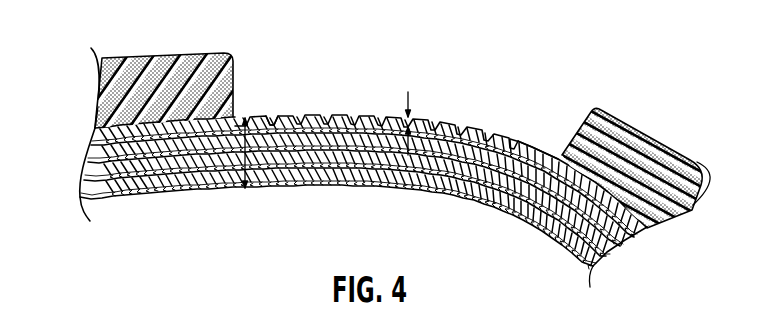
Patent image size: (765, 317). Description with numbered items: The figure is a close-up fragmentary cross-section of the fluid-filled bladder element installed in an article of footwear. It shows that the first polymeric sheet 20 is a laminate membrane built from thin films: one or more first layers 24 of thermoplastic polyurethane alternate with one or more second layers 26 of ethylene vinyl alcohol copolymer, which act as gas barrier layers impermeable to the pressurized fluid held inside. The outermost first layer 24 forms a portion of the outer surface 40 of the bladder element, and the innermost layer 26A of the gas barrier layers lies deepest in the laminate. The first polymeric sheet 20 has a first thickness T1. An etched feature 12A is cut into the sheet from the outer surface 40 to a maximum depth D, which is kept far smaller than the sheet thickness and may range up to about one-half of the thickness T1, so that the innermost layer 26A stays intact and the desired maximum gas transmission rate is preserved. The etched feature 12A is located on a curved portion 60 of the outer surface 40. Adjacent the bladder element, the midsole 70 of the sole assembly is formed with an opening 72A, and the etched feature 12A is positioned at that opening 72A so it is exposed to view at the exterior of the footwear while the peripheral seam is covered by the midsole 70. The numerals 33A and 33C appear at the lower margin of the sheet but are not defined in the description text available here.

The etched feature 12A is at (344, 114).
The first polymeric sheet 20 is at (363, 181).
The first layers 24 is at (96, 130).
The second layers 26 is at (647, 229).
The innermost layer 26A is at (307, 177).
The outer surface 40 is at (267, 117).
The curved portion 60 is at (517, 142).
The midsole 70 is at (652, 135).
The opening 72A is at (235, 65).
The maximum depth D is at (408, 92).
The first thickness T1 is at (243, 158).
The portion 33A is at (123, 306).
The portion 33C is at (500, 311).